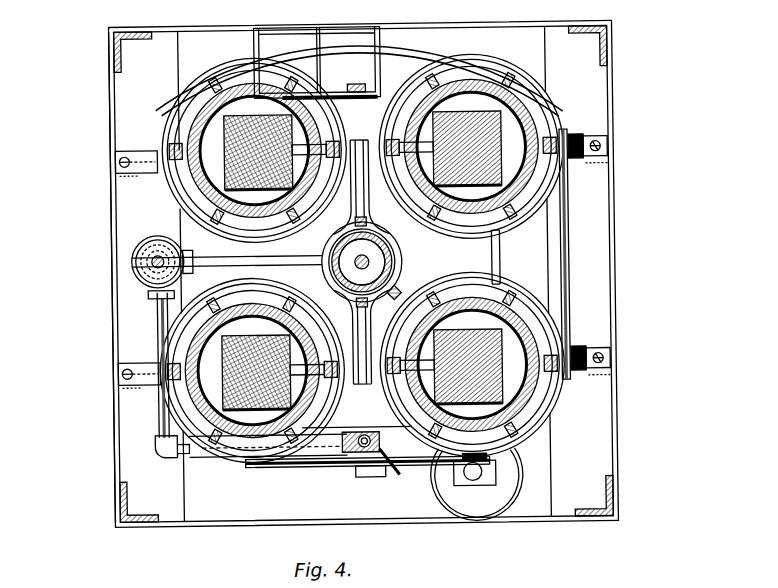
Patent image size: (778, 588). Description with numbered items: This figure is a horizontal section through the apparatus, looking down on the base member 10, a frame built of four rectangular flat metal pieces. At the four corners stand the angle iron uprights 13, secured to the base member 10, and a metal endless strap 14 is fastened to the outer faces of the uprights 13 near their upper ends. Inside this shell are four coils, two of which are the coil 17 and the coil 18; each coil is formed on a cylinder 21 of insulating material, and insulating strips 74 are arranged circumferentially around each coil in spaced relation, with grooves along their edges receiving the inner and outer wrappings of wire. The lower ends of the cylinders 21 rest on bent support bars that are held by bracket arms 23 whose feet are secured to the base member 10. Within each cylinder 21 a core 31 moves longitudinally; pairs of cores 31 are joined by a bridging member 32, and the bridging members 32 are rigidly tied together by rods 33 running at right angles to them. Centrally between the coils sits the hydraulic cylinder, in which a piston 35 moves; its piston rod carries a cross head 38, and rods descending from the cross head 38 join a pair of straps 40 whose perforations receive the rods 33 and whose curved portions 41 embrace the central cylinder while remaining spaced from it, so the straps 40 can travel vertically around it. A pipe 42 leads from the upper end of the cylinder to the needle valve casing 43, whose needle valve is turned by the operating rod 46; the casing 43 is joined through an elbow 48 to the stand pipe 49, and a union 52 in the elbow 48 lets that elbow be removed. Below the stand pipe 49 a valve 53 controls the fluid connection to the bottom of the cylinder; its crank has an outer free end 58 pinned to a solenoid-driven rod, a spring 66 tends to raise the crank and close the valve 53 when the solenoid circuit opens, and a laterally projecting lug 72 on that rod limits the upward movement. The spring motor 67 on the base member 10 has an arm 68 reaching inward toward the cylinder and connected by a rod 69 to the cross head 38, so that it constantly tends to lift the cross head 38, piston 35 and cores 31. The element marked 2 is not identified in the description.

The screw 2 is at (118, 372).
The base member 10 is at (182, 520).
The angle iron uprights 13 is at (115, 50).
The metal endless strap 14 is at (232, 20).
The coil 17 is at (180, 190).
The coil 18 is at (112, 236).
The cylinder 21 is at (172, 126).
The bracket arms 23 is at (118, 158).
The core 31 is at (362, 260).
The bridging member 32 is at (196, 245).
The rods 33 is at (435, 122).
The piston 35 is at (403, 262).
The cross head 38 is at (357, 265).
The straps 40 is at (361, 139).
The curved portions 41 is at (397, 290).
The pipe 42 is at (150, 293).
The needle valve casing 43 is at (155, 289).
The operating rod 46 is at (150, 263).
The elbow 48 is at (157, 328).
The stand pipe 49 is at (352, 454).
The union 52 is at (258, 457).
The valve 53 is at (372, 478).
The outer free end of the crank 58 is at (446, 495).
The spring 66 is at (388, 462).
The spring motor 67 is at (341, 19).
The arm 68 is at (418, 52).
The rod 69 is at (356, 221).
The laterally projecting lug 72 is at (470, 487).
The insulating strips 74 is at (175, 160).